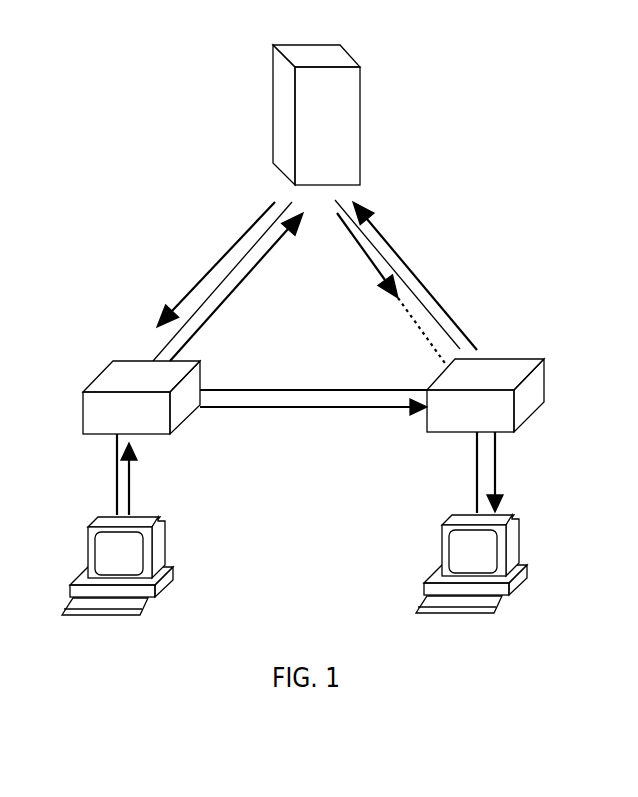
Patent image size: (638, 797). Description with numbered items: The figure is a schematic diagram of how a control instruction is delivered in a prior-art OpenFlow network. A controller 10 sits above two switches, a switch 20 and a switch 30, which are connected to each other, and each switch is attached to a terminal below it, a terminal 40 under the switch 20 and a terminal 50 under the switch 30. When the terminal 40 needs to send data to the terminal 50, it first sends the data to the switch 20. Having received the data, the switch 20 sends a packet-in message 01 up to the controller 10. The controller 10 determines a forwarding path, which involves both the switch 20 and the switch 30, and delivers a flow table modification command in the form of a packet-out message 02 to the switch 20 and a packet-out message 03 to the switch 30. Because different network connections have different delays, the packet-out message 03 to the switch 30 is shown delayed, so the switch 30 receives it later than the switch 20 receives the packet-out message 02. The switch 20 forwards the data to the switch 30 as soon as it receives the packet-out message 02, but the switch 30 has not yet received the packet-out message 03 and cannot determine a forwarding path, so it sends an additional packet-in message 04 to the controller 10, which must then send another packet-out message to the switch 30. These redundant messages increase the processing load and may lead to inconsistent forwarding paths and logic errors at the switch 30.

The controller 10 is at (312, 43).
The switch 20 is at (103, 373).
The switch 30 is at (512, 360).
The terminal 40 is at (93, 523).
The terminal 50 is at (460, 515).
The packet-in message 01 is at (237, 285).
The packet-out message 02 is at (225, 252).
The packet-out message 03 is at (359, 243).
The packet-in message 04 is at (426, 288).